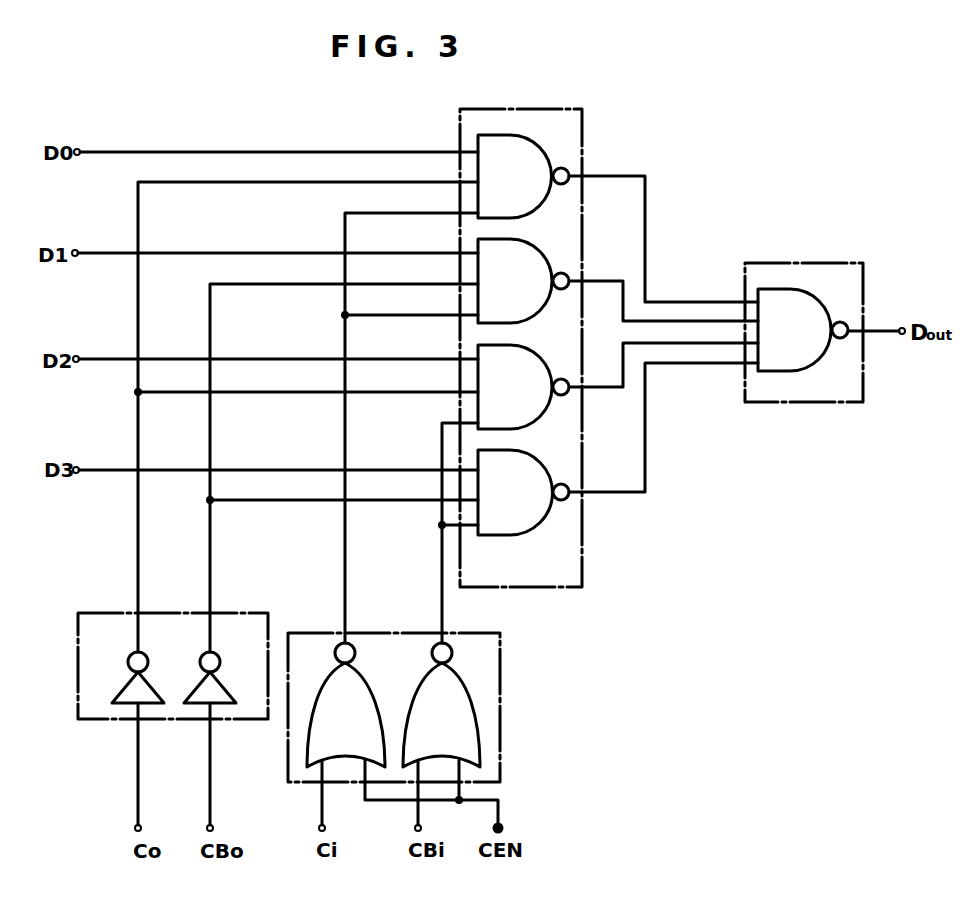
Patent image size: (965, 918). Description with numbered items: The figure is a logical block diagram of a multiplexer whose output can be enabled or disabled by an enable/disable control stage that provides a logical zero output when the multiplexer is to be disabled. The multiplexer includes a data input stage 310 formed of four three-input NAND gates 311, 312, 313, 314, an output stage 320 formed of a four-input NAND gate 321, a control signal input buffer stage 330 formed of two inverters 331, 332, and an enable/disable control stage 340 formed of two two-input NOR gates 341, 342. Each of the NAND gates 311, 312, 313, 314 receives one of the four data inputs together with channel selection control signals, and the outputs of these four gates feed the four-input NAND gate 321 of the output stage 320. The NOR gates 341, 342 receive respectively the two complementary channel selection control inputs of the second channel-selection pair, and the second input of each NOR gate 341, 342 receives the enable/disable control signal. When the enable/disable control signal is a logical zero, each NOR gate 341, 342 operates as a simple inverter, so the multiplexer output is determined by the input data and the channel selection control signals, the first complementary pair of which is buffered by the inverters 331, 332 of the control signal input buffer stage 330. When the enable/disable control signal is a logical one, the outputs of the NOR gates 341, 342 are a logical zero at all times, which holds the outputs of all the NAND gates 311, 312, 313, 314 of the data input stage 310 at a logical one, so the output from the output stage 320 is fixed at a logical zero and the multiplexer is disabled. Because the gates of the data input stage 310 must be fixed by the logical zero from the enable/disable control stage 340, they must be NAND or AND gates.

The data input stage 310 is at (584, 138).
The three-input NAND gate 311 is at (523, 176).
The three-input NAND gate 312 is at (523, 281).
The three-input NAND gate 313 is at (523, 387).
The three-input NAND gate 314 is at (523, 492).
The output stage 320 is at (826, 403).
The four-input NAND gate 321 is at (803, 330).
The control signal input buffer stage 330 is at (168, 612).
The inverter 331 is at (152, 690).
The inverter 332 is at (222, 690).
The enable/disable control stage 340 is at (403, 632).
The two-input NOR gate 341 is at (346, 705).
The two-input NOR gate 342 is at (441, 705).